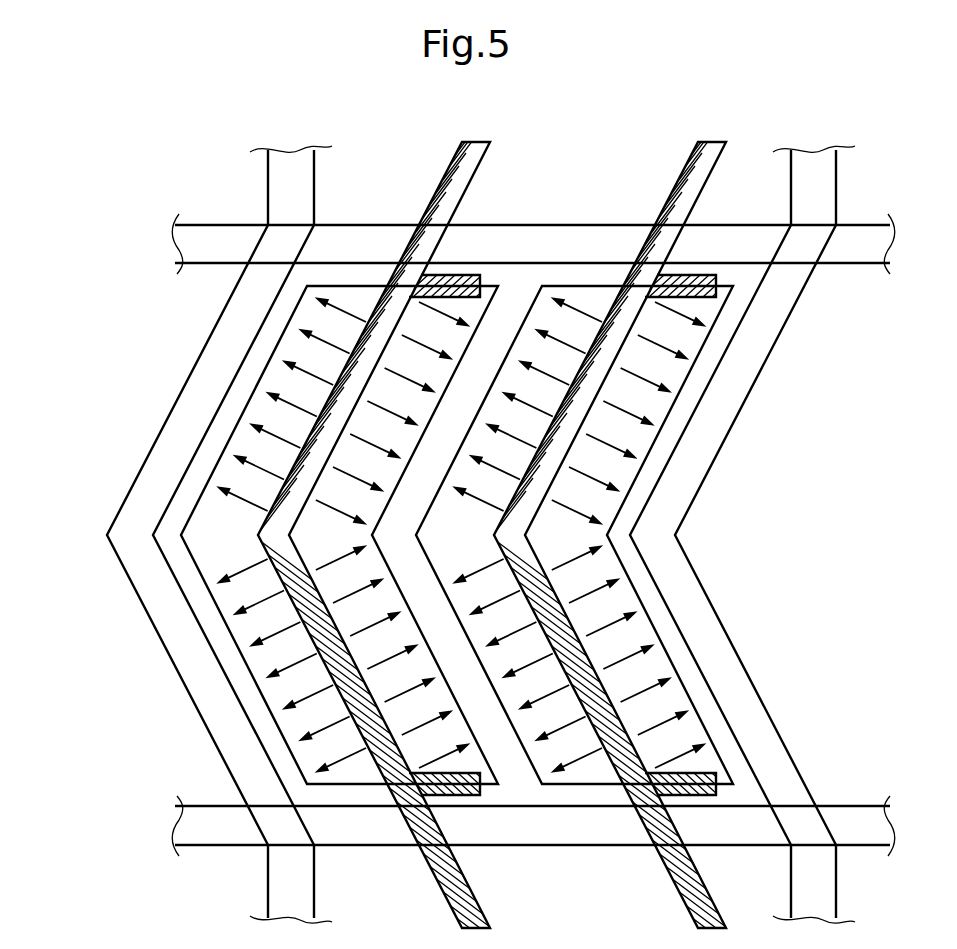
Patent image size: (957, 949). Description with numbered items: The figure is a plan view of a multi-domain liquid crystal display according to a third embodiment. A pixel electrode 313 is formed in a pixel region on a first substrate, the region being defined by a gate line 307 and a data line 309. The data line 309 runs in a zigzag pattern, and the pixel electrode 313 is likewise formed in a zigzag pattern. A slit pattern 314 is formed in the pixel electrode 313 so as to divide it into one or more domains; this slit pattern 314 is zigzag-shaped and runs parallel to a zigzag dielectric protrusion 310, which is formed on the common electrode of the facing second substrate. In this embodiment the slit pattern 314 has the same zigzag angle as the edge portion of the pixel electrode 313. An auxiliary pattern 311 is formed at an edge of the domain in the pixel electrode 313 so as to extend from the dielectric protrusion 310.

The gate line 307 is at (600, 833).
The data line 309 is at (715, 437).
The dielectric protrusion 310 is at (330, 630).
The auxiliary pattern 311 is at (462, 790).
The pixel electrode 313 is at (207, 537).
The slit pattern 314 is at (484, 370).